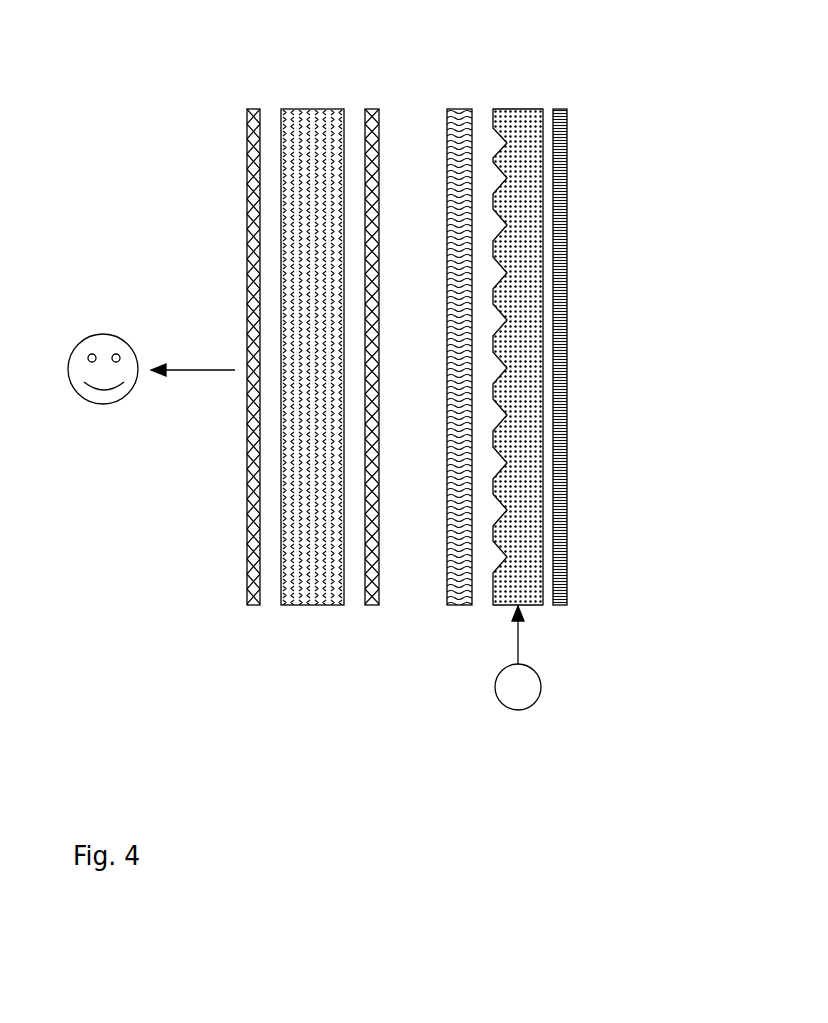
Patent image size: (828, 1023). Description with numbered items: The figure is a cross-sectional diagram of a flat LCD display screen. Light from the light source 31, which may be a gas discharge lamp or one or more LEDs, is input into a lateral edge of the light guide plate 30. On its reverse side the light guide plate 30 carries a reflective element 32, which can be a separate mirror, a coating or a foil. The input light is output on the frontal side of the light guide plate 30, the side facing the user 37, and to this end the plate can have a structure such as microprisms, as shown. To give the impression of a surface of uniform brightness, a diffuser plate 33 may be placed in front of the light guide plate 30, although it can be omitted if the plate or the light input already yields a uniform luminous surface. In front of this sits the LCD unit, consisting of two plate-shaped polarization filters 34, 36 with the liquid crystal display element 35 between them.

The light guide plate 30 is at (520, 124).
The light source 31 is at (541, 687).
The reflective element 32 is at (567, 486).
The diffuser plate 33 is at (460, 607).
The polarization filter 34 is at (367, 607).
The liquid crystal display element 35 is at (295, 124).
The polarization filter 36 is at (250, 607).
The user 37 is at (105, 322).